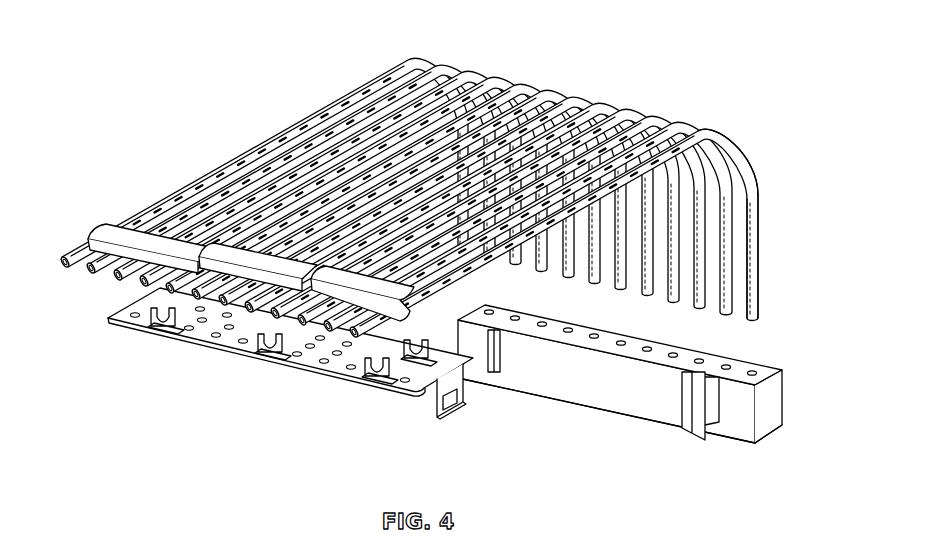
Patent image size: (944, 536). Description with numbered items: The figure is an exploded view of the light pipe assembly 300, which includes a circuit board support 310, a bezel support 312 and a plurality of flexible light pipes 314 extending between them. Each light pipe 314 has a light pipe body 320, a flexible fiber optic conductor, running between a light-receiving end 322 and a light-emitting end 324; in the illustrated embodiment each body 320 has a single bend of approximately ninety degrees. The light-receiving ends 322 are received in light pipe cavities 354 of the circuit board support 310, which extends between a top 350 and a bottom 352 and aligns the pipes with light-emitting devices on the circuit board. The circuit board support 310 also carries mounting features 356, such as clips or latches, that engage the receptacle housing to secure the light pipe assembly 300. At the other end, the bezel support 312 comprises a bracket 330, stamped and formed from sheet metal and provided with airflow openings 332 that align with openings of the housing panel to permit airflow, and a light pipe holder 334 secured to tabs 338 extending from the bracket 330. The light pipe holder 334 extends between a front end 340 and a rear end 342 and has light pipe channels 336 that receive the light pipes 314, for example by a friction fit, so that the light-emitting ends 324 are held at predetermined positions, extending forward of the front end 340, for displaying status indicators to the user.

The light pipe assembly 300 is at (372, 46).
The circuit board support 310 is at (648, 397).
The bezel support 312 is at (295, 378).
The flexible light pipes 314 is at (434, 245).
The light pipe body 320 is at (735, 140).
The light-receiving end 322 is at (758, 318).
The light-emitting end 324 is at (357, 334).
The bracket 330 is at (403, 383).
The airflow openings 332 is at (290, 369).
The light pipe holder 334 is at (412, 314).
The light pipe channels 336 is at (390, 330).
The tabs 338 is at (270, 348).
The front end 340 is at (86, 238).
The rear end 342 is at (251, 315).
The top 350 is at (768, 368).
The bottom 352 is at (762, 442).
The light pipe cavities 354 is at (756, 367).
The mounting features 356 is at (495, 372).